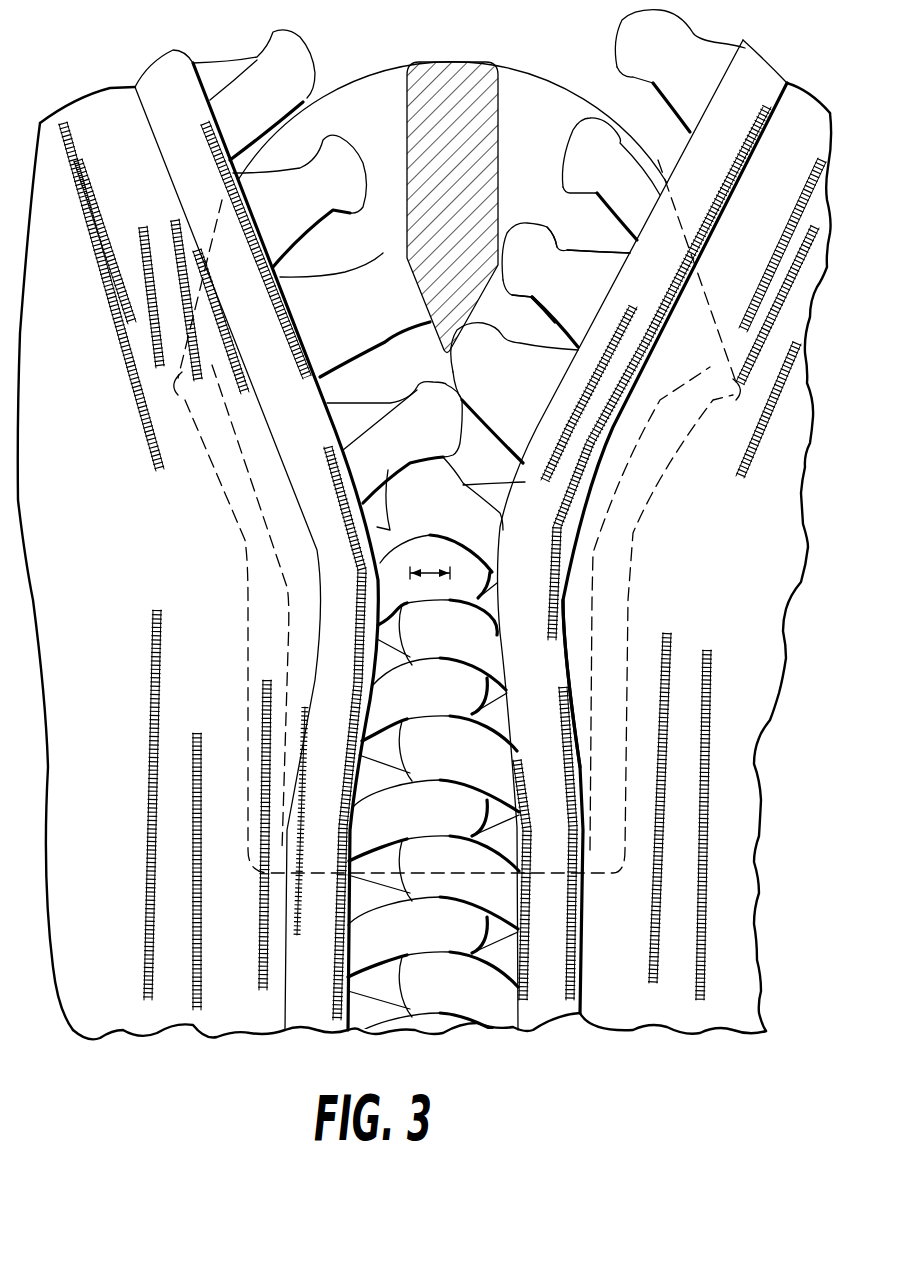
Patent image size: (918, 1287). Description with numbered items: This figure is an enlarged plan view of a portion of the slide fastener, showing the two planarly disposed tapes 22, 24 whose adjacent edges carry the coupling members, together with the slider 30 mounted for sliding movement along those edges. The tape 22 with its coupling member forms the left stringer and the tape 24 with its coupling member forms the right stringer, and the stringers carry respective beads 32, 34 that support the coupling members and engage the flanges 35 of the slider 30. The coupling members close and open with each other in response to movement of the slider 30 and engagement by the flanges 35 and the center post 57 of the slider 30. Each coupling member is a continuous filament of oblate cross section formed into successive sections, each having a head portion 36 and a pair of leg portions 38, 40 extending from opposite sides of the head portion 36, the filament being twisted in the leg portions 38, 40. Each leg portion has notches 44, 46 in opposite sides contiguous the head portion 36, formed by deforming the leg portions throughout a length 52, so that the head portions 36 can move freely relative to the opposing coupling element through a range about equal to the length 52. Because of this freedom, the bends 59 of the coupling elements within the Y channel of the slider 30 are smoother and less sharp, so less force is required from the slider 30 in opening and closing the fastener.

The tape 22 is at (110, 123).
The tape 24 is at (795, 110).
The slider 30 is at (533, 73).
The bead 32 is at (166, 190).
The bead 34 is at (730, 220).
The flanges 35 is at (267, 648).
The head portion 36 is at (340, 163).
The leg portion 38 is at (570, 288).
The leg portion 40 is at (600, 267).
The notch 44 is at (553, 251).
The notch 46 is at (532, 297).
The length 52 is at (430, 577).
The center post 57 is at (468, 85).
The bends 59 is at (588, 543).